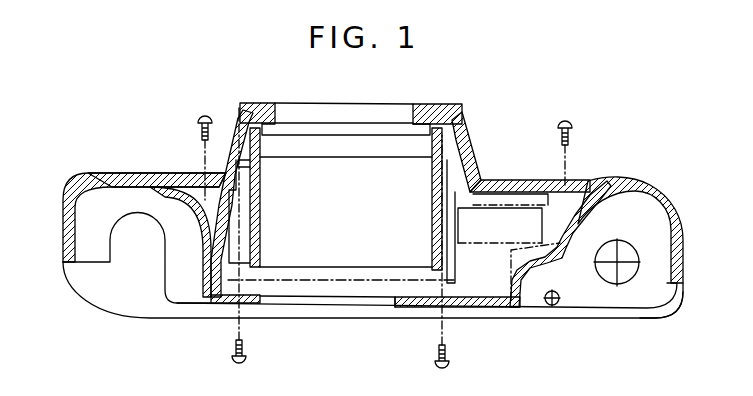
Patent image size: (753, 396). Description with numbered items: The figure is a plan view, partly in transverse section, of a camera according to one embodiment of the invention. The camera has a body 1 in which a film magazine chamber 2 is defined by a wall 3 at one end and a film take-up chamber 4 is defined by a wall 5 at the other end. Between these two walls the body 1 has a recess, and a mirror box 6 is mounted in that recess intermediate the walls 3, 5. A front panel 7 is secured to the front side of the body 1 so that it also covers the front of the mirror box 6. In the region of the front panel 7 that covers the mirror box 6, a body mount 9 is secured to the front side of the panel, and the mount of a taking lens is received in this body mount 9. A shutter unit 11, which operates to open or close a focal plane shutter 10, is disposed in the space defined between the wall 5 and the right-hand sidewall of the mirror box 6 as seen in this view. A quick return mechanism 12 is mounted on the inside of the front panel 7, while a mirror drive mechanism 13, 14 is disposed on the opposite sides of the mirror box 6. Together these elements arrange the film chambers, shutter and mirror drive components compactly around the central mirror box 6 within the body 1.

The body 1 is at (616, 190).
The film magazine chamber 2 is at (90, 262).
The wall 3 is at (207, 232).
The film take-up chamber 4 is at (645, 304).
The wall 5 is at (562, 257).
The mirror box 6 is at (432, 209).
The front panel 7 is at (192, 183).
The body mount 9 is at (418, 104).
The focal plane shutter 10 is at (313, 292).
The shutter unit 11 is at (485, 290).
The quick return mechanism 12 is at (496, 200).
The mirror drive mechanism 13 is at (238, 219).
The mirror drive mechanism 14 is at (439, 247).